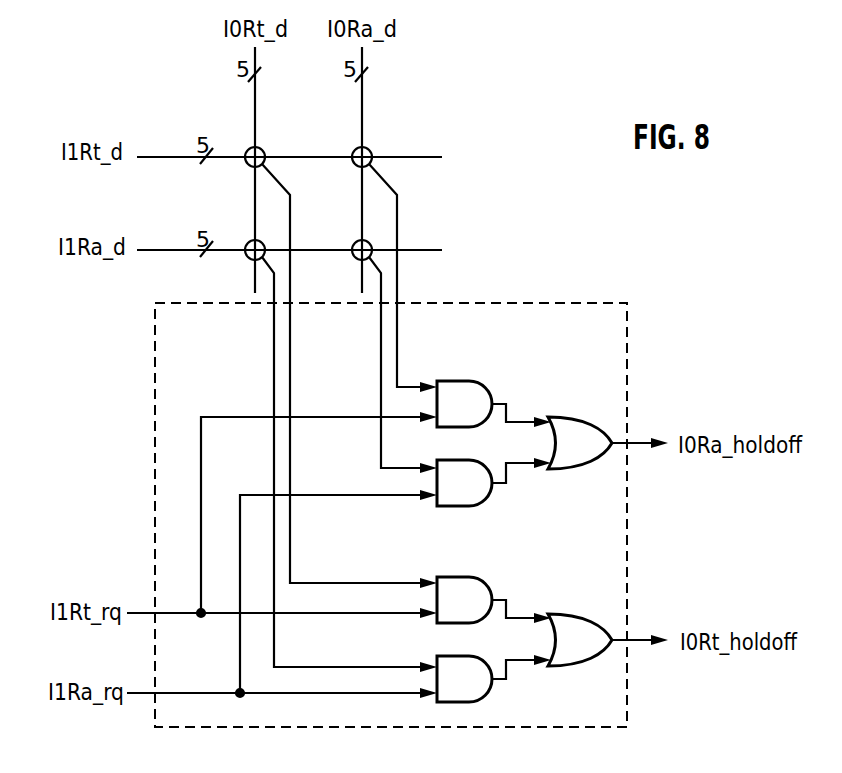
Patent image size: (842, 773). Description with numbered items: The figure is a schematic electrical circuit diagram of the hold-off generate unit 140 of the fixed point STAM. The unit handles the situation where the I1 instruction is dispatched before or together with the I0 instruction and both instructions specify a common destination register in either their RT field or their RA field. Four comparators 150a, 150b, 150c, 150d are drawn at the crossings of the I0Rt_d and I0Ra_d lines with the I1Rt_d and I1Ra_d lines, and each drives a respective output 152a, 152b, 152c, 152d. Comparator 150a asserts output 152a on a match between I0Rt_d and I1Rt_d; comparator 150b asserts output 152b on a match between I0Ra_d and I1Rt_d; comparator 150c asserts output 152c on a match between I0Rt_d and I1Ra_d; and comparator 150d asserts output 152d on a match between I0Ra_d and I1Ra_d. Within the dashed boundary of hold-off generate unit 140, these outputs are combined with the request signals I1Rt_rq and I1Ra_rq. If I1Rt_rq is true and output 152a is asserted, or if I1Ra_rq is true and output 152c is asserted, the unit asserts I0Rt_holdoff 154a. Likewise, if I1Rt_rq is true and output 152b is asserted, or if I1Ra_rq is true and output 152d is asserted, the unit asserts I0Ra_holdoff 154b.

The hold-off generate unit 140 is at (540, 303).
The comparator 150a is at (263, 149).
The comparator 150b is at (370, 149).
The comparator 150c is at (247, 243).
The comparator 150d is at (354, 243).
The output 152a is at (290, 355).
The output 152b is at (397, 372).
The output 152c is at (273, 387).
The output 152d is at (378, 375).
The I0Rt_holdoff 154a is at (643, 642).
The I0Ra_holdoff 154b is at (643, 445).